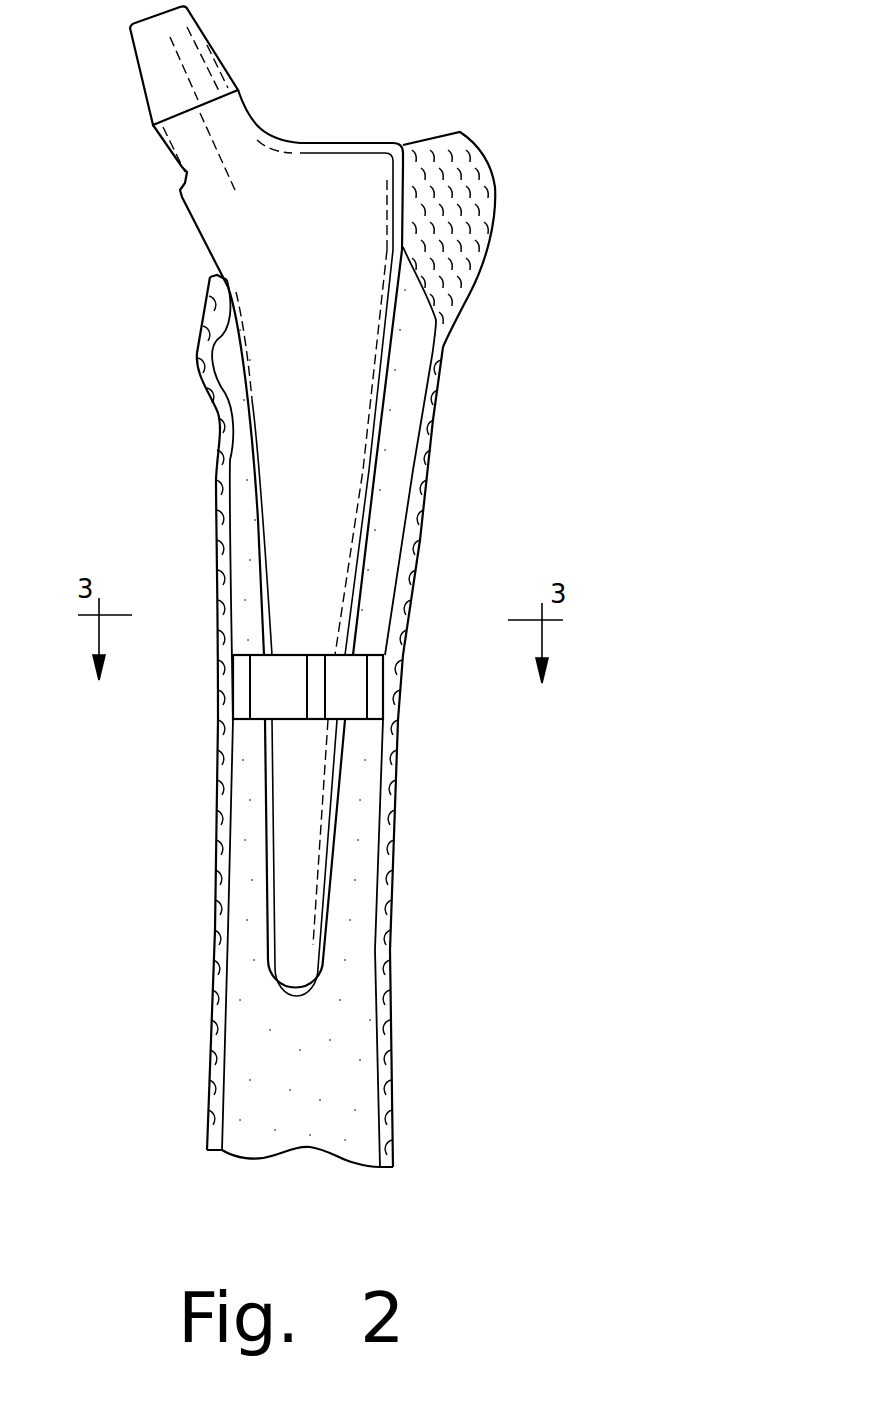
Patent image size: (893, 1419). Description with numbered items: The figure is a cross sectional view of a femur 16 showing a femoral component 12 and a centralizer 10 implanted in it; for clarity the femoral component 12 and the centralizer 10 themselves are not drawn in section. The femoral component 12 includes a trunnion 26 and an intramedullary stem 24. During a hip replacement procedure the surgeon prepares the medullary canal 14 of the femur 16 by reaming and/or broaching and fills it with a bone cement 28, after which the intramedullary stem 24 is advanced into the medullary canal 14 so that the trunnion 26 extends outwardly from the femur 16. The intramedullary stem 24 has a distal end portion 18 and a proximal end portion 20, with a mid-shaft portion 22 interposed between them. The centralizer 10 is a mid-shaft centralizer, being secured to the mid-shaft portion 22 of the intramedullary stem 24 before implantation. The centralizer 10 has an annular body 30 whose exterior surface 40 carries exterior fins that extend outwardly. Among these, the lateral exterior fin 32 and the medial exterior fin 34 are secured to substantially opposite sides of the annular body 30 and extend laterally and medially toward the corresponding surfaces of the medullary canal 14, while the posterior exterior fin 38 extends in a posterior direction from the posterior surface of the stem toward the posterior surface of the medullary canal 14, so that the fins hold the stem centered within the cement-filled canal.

The centralizer 10 is at (347, 678).
The femoral component 12 is at (347, 370).
The medullary canal 14 is at (398, 498).
The femur 16 is at (473, 257).
The distal end portion 18 is at (292, 980).
The proximal end portion 20 is at (322, 187).
The mid-shaft portion 22 is at (325, 622).
The intramedullary stem 24 is at (333, 565).
The trunnion 26 is at (205, 47).
The bone cement 28 is at (400, 433).
The annular body 30 is at (267, 673).
The lateral exterior fin 32 is at (378, 668).
The medial exterior fin 34 is at (235, 669).
The posterior exterior fin 38 is at (317, 695).
The exterior surface 40 is at (265, 696).